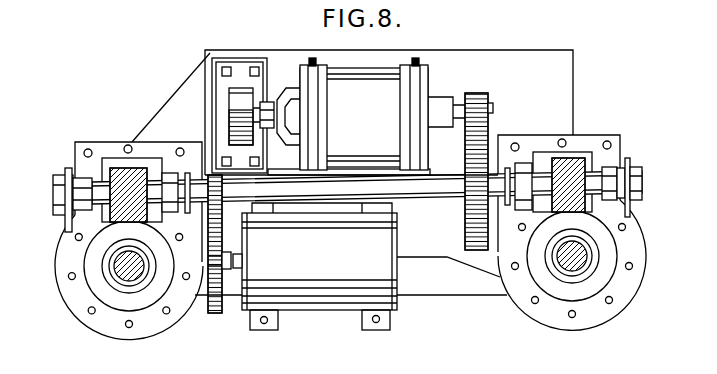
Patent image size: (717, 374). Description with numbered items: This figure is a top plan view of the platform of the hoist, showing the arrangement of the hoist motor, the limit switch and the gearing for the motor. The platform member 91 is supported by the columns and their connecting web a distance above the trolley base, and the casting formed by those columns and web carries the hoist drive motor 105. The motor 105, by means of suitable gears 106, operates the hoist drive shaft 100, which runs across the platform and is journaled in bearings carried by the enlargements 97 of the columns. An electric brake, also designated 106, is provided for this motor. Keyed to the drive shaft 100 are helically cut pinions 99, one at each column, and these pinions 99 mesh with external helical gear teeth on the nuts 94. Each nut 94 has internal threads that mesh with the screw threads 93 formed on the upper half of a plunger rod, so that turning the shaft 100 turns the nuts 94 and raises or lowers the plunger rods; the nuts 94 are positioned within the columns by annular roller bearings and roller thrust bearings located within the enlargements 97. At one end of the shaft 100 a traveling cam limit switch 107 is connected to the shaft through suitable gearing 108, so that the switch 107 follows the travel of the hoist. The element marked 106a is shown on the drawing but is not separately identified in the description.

The platform member 91 is at (492, 52).
The screw threads 93 is at (122, 282).
The nut 94 is at (86, 258).
The enlargements of the column 97 is at (60, 295).
The helically cut pinions 99 is at (112, 168).
The hoist drive shaft 100 is at (195, 182).
The hoist drive motor 105 is at (337, 88).
The gears 106 is at (487, 135).
The pinion 106a is at (239, 90).
The traveling cam limit switch 107 is at (330, 292).
The gearing 108 is at (218, 312).